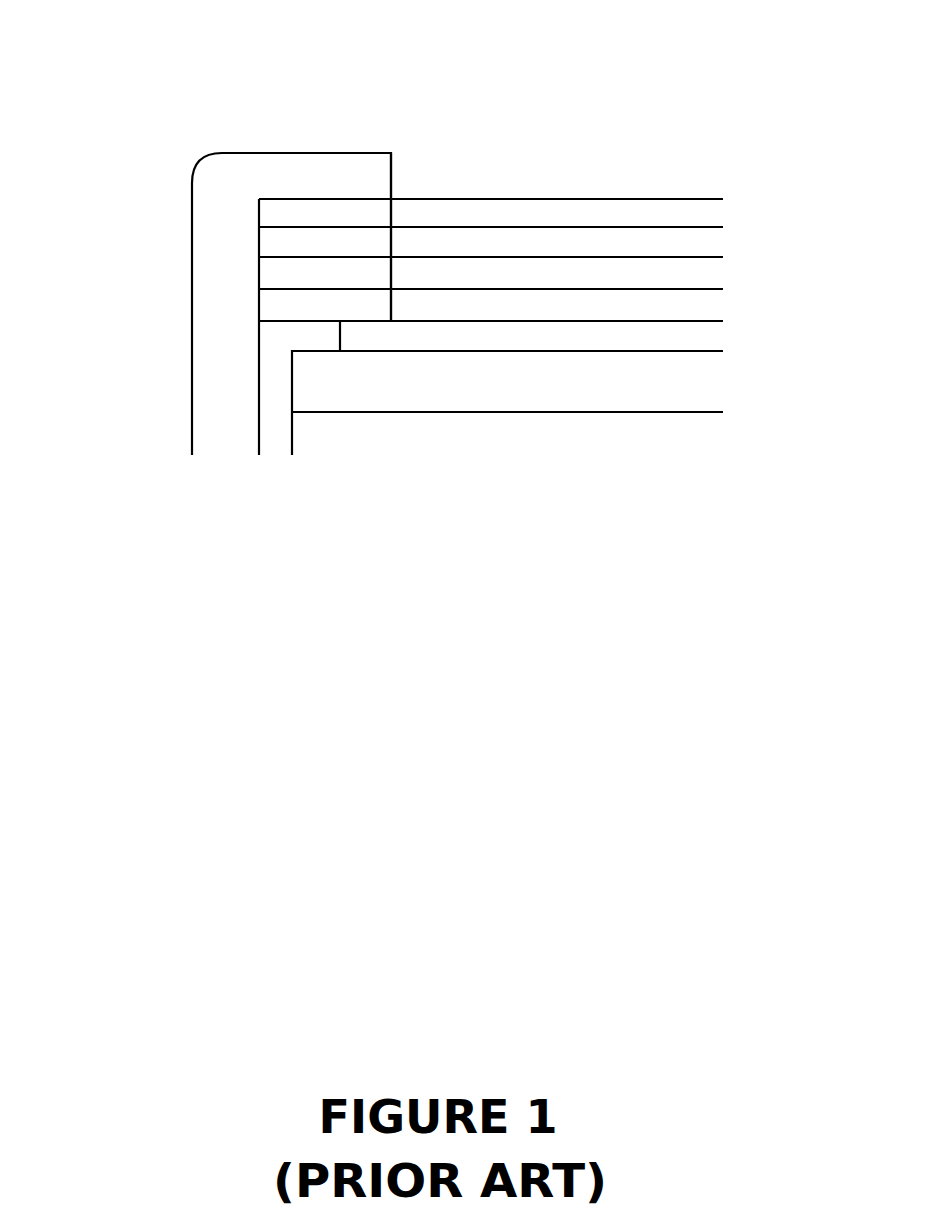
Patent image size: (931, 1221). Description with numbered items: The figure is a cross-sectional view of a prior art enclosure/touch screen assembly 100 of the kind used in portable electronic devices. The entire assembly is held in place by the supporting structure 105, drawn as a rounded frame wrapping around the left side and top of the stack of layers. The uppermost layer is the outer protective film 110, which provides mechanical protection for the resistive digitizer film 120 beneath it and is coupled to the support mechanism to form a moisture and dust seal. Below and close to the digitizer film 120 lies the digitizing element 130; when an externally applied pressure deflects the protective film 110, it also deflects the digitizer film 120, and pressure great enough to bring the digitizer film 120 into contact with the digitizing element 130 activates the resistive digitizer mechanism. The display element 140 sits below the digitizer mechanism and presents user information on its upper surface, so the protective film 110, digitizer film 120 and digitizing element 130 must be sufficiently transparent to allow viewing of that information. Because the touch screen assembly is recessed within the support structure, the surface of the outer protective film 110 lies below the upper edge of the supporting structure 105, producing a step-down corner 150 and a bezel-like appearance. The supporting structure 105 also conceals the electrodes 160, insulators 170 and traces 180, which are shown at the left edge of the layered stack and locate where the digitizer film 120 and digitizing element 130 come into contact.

The enclosure/touch screen assembly 100 is at (23, 28).
The supporting structure 105 is at (292, 185).
The outer protective film 110 is at (283, 212).
The resistive digitizer film 120 is at (715, 247).
The digitizing element 130 is at (707, 312).
The display element 140 is at (707, 387).
The step-down corner 150 is at (393, 198).
The electrodes 160 is at (287, 243).
The insulators 170 is at (288, 275).
The traces 180 is at (285, 306).